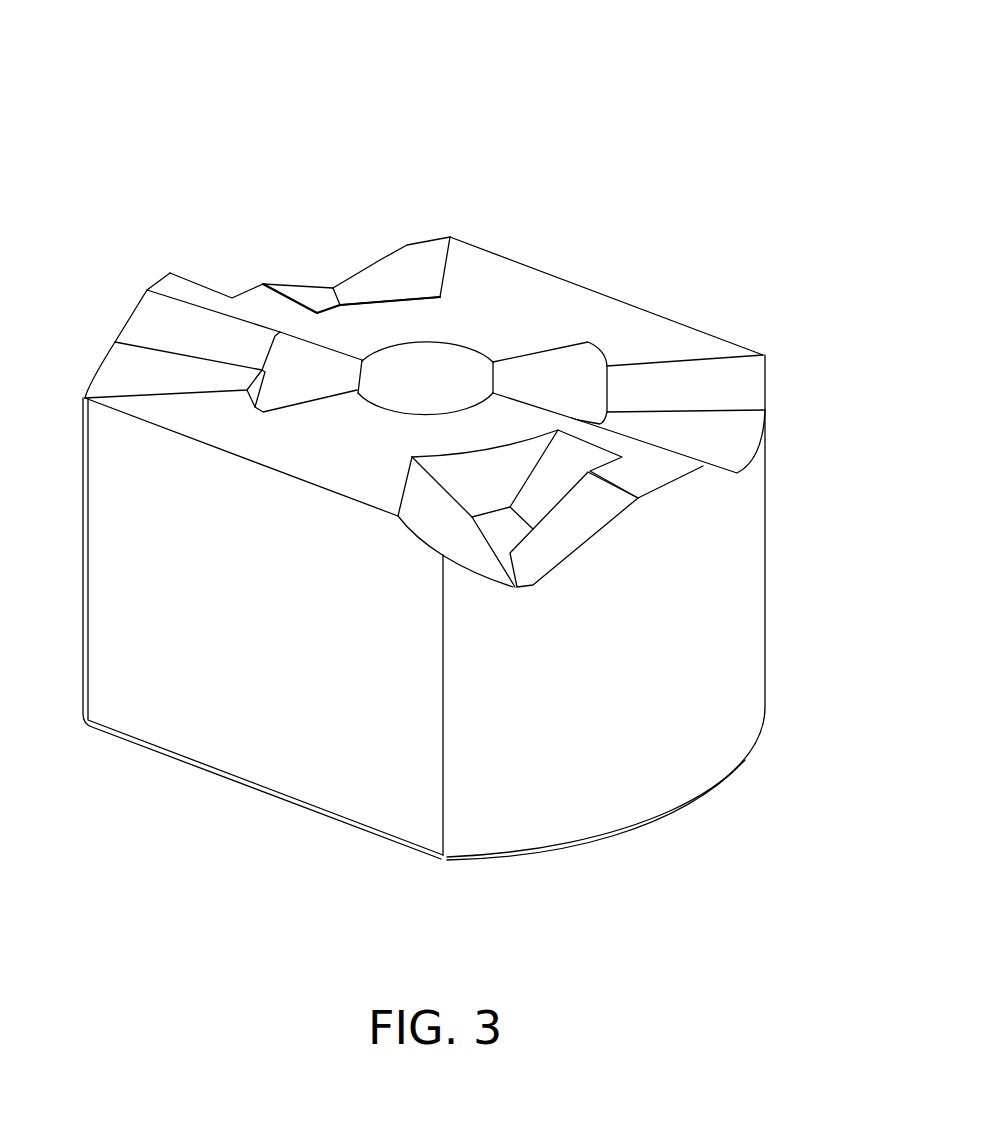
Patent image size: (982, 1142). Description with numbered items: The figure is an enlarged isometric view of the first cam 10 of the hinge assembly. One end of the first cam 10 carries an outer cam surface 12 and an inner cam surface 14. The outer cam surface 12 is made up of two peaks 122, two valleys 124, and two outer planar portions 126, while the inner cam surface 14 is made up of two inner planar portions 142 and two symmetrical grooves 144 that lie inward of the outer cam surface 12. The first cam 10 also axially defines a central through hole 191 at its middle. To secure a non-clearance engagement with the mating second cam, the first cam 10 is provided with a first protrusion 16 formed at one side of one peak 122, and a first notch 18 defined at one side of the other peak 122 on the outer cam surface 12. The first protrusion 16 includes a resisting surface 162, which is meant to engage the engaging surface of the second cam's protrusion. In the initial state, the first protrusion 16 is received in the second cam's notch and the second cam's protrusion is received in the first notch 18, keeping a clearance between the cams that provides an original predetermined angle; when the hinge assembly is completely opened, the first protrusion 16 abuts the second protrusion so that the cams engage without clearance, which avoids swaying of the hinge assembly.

The first cam 10 is at (353, 60).
The outer cam surface 12 is at (155, 315).
The inner cam surface 14 is at (452, 164).
The inner planar portion 142 is at (425, 322).
The groove 144 is at (307, 373).
The first protrusion 16 is at (628, 477).
The resisting surface 162 is at (580, 523).
The first notch 18 is at (211, 290).
The central through hole 191 is at (445, 375).
The peak 122 is at (675, 487).
The valley 124 is at (722, 438).
The outer planar portion 126 is at (330, 452).